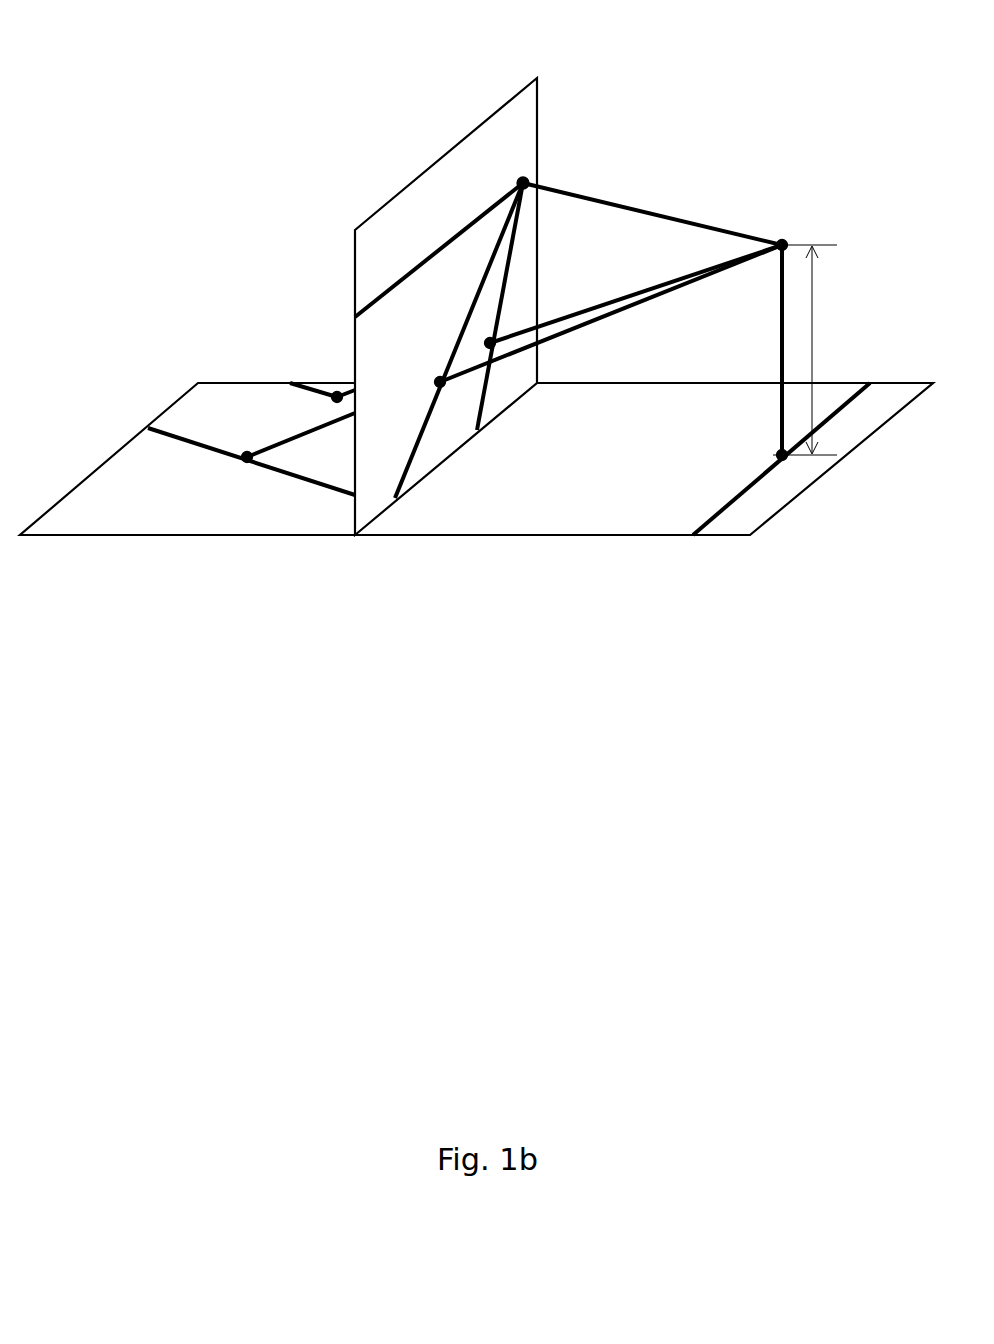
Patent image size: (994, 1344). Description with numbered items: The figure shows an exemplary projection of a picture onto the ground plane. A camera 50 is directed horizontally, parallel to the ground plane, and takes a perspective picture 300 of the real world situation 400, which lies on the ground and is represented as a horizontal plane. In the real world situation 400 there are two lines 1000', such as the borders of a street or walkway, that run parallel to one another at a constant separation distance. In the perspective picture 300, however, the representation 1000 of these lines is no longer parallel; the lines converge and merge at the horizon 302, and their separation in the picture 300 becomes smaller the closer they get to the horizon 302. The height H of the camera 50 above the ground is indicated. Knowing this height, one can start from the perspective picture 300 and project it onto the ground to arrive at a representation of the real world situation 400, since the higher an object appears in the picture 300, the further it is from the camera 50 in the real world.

The camera 50 is at (799, 222).
The picture 300 is at (537, 118).
The horizon 302 is at (475, 215).
The real world situation 400 is at (266, 228).
The representation of the lines 1000 is at (503, 337).
The lines 1000' is at (251, 402).